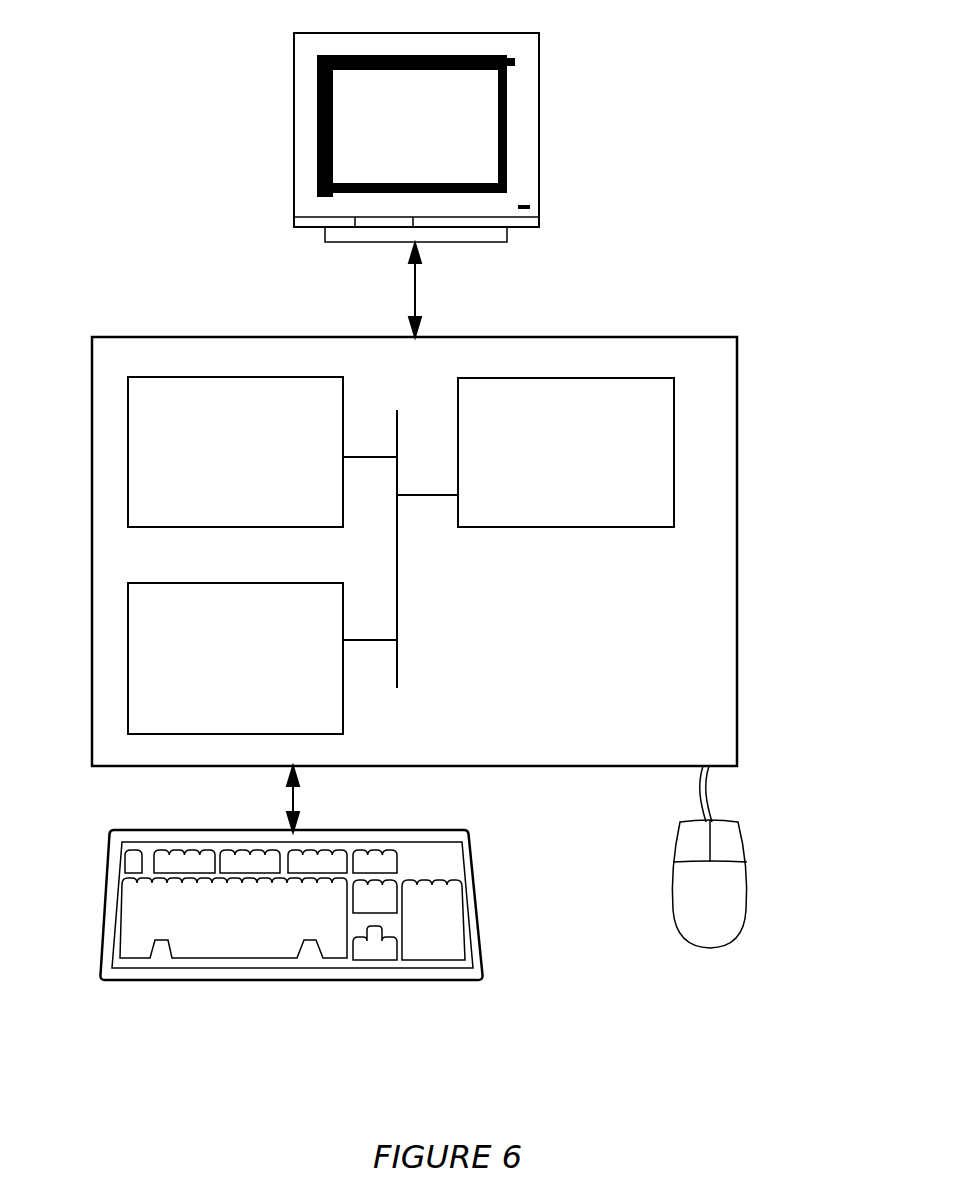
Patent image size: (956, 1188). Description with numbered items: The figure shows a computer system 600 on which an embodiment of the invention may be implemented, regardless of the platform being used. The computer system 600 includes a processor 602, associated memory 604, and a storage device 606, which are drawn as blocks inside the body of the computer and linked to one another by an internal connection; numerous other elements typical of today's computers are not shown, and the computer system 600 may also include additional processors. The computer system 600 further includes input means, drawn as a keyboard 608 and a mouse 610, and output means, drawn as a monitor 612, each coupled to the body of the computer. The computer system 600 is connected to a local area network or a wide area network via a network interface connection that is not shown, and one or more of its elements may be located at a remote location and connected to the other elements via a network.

The computer system 600 is at (762, 600).
The processor 602 is at (214, 464).
The memory 604 is at (562, 464).
The storage device 606 is at (211, 670).
The keyboard 608 is at (206, 934).
The mouse 610 is at (687, 902).
The monitor 612 is at (384, 142).